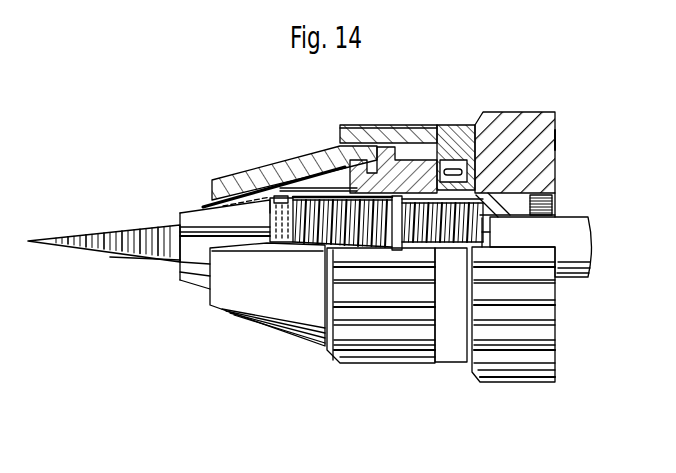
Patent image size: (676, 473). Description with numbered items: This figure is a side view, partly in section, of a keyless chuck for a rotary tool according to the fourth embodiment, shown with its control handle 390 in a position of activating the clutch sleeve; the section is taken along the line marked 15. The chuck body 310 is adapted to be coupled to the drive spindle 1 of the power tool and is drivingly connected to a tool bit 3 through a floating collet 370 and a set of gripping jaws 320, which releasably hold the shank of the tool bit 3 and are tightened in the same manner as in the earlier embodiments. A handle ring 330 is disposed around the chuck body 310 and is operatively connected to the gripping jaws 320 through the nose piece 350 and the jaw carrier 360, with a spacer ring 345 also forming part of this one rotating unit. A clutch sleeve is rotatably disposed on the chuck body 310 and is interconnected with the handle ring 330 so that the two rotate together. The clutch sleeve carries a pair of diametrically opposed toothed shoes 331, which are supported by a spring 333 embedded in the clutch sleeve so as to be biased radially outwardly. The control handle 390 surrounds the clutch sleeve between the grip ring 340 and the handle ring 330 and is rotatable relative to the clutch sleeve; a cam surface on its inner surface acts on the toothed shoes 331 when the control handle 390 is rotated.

The drive spindle 1 is at (573, 245).
The tool bit 3 is at (77, 258).
The section line 15- 15 is at (440, 218).
The chuck body 310 is at (530, 194).
The gripping jaws 320 is at (187, 284).
The handle ring 330 is at (380, 370).
The toothed shoes 331 is at (535, 140).
The spring 333 is at (485, 122).
The grip ring 340 is at (515, 387).
The spacer ring 345 is at (402, 135).
The nose piece 350 is at (278, 335).
The jaw carrier 360 is at (307, 182).
The floating collet 370 is at (282, 242).
The control handle 390 is at (457, 130).